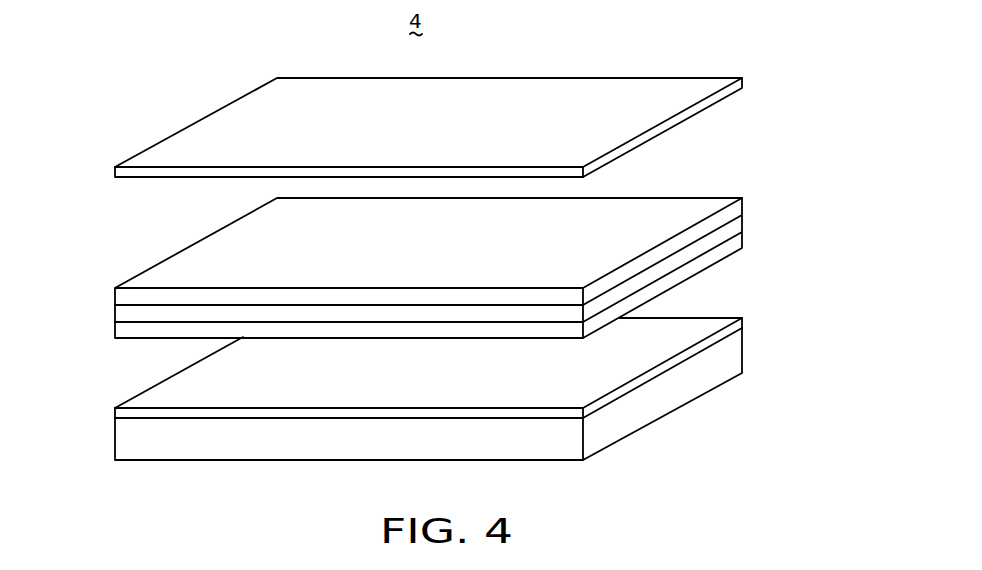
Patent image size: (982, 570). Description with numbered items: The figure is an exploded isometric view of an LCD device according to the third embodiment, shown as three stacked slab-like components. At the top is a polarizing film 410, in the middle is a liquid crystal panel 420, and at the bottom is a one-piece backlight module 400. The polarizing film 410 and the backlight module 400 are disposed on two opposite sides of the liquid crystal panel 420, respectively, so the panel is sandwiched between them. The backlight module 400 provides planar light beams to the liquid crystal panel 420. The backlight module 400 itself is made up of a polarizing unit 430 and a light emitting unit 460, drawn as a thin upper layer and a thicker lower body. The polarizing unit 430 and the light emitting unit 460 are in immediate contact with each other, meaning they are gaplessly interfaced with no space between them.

The backlight module 400 is at (424, 373).
The polarizing film 410 is at (647, 93).
The liquid crystal panel 420 is at (110, 285).
The polarizing unit 430 is at (703, 327).
The light emitting unit 460 is at (672, 395).